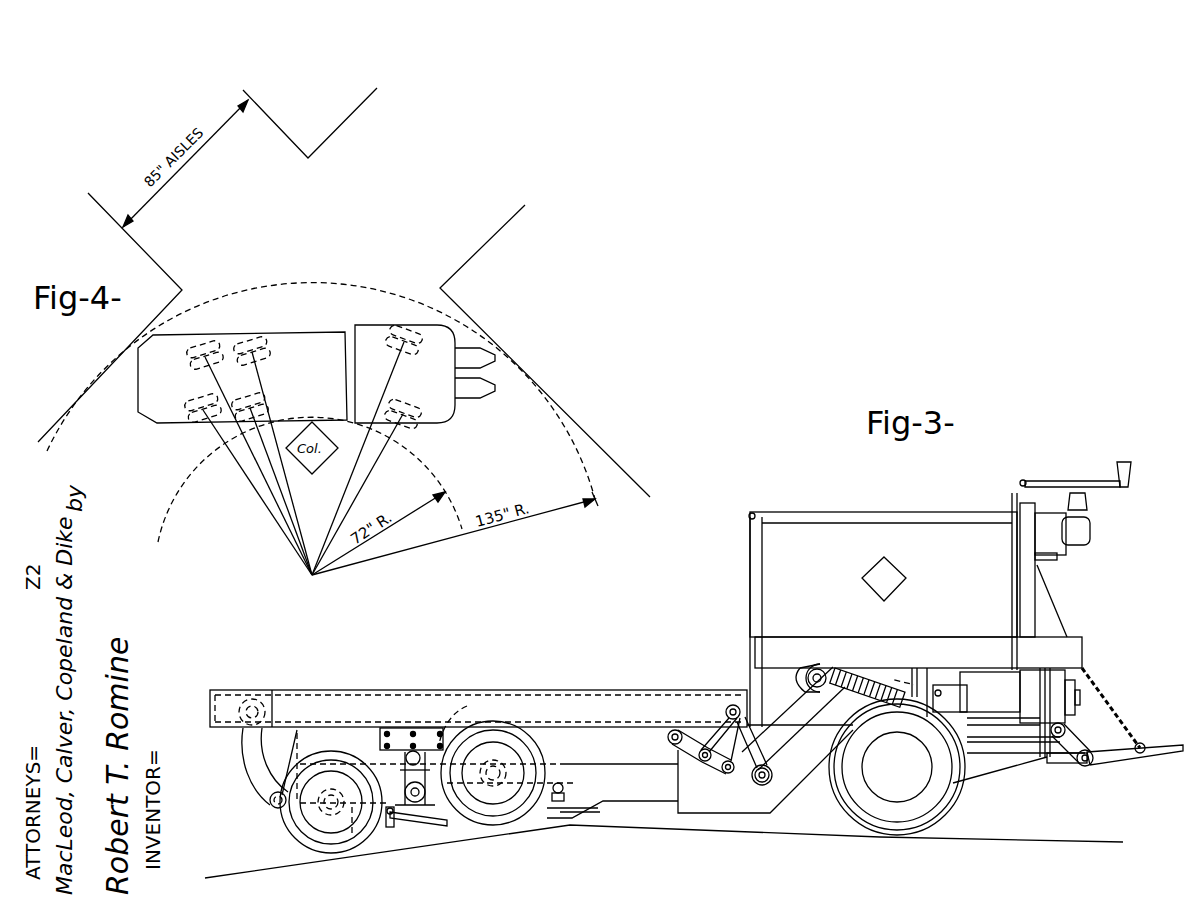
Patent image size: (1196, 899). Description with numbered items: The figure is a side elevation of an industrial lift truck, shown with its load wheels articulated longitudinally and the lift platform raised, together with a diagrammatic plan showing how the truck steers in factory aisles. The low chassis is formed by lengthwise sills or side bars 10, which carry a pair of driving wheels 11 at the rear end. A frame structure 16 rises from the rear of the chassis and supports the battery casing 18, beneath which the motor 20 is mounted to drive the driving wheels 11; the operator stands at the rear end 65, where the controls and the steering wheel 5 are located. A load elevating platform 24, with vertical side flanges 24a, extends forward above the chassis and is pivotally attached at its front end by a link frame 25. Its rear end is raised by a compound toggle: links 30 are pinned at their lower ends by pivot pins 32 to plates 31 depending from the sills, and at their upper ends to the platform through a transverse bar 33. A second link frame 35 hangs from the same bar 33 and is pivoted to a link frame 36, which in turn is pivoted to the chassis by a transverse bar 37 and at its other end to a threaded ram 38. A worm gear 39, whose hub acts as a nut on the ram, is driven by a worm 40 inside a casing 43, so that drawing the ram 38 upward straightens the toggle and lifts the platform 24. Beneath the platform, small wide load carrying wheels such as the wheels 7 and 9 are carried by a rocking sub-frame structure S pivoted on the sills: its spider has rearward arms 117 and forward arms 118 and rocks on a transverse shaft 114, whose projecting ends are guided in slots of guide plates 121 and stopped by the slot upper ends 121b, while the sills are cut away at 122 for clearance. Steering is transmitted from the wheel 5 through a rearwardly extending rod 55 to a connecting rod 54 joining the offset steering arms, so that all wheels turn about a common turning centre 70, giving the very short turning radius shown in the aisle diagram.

In FIG. 3, the steering wheel 5 is at (1113, 485).
In FIG. 3, the load carrying wheel 7 is at (290, 827).
In FIG. 3, the load carrying wheel 9 is at (520, 822).
In FIG. 3, the chassis sills 10 is at (627, 757).
In FIG. 3, the driving wheels 11 is at (945, 797).
In FIG. 3, the frame structure 16 is at (935, 650).
In FIG. 3, the battery casing 18 is at (883, 619).
In FIG. 3, the motor 20 is at (1055, 698).
In FIG. 4, the load elevating platform 24 is at (293, 340).
In FIG. 3, the load elevating platform 24 is at (461, 690).
In FIG. 3, the vertical side flanges 24a is at (230, 725).
In FIG. 3, the link frame 25 is at (260, 770).
In FIG. 3, the links 30 is at (757, 782).
In FIG. 3, the plates 31 is at (698, 812).
In FIG. 3, the pivot pins 32 is at (760, 786).
In FIG. 3, the transverse bar 33 is at (733, 705).
In FIG. 3, the second link frame 35 is at (717, 733).
In FIG. 3, the link frame 36 is at (690, 753).
In FIG. 3, the transverse bar 37 is at (675, 730).
In FIG. 3, the threaded ram 38 is at (790, 752).
In FIG. 3, the worm gear 39 is at (846, 670).
In FIG. 3, the worm 40 is at (820, 670).
In FIG. 3, the casing 43 is at (802, 672).
In FIG. 3, the connecting rod 54 is at (410, 819).
In FIG. 3, the rearwardly extending rod 55 is at (630, 802).
In FIG. 3, the operator's end 65 is at (1173, 733).
In FIG. 4, the turning centre 70 is at (312, 575).
In FIG. 3, the transverse shaft 114 is at (417, 803).
In FIG. 3, the rearward arms 117 is at (468, 826).
In FIG. 3, the forward arms 118 is at (352, 820).
In FIG. 3, the guide plates 121 is at (427, 733).
In FIG. 3, the upper ends of guide slots 121b is at (407, 753).
In FIG. 3, the sill cut-away 122 is at (474, 718).
In FIG. 3, the sub-frame structure S is at (447, 810).